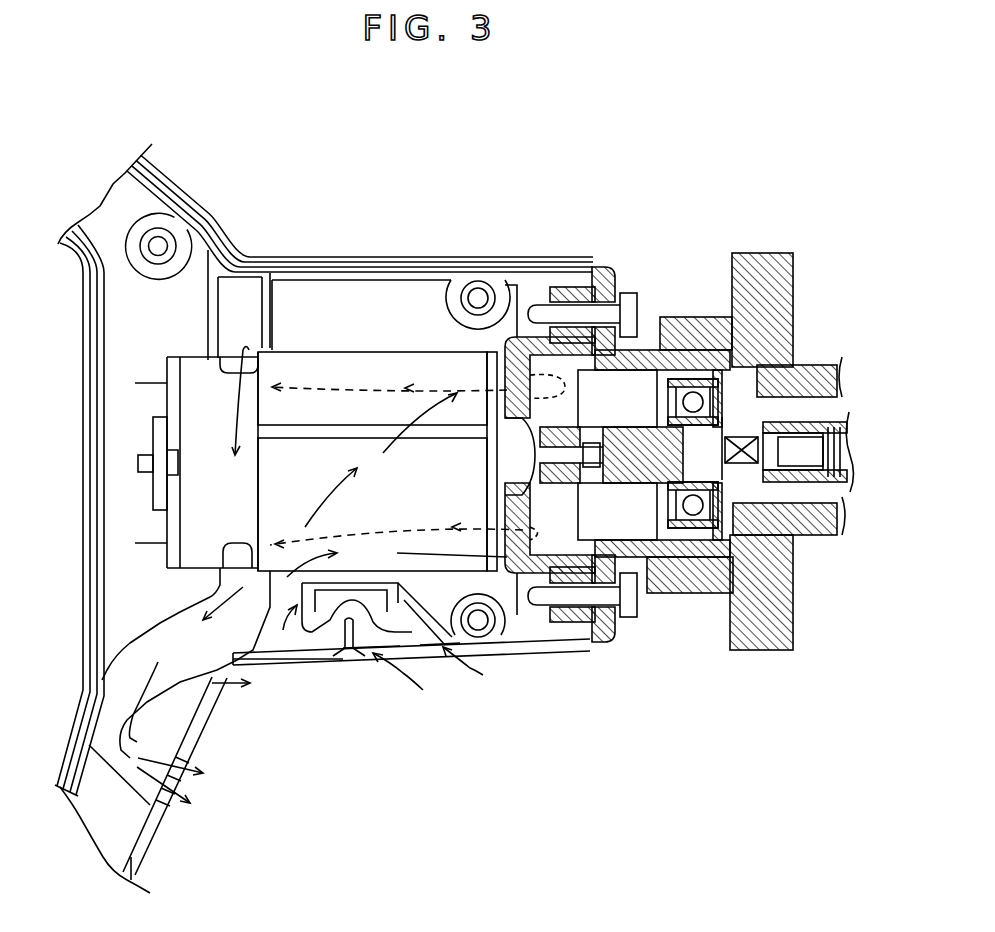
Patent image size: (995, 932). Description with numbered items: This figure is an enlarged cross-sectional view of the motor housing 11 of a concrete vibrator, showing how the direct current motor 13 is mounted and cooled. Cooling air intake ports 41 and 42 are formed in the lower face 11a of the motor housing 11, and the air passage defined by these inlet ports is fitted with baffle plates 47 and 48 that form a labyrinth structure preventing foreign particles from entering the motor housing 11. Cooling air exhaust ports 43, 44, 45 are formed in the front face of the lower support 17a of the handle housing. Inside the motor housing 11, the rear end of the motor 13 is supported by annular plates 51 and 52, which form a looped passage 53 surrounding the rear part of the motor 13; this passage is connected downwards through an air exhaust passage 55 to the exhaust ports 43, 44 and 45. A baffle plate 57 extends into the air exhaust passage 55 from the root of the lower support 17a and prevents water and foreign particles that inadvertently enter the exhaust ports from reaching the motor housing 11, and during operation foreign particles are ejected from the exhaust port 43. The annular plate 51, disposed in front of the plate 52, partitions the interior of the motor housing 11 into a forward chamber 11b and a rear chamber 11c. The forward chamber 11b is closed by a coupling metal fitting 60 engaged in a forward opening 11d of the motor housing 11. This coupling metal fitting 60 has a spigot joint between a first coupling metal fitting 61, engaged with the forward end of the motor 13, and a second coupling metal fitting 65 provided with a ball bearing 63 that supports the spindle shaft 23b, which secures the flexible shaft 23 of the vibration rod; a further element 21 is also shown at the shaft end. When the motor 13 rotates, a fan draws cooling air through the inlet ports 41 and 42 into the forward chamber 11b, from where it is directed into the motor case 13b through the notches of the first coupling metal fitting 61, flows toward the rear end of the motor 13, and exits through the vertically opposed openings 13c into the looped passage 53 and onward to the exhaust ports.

The motor housing 11 is at (348, 520).
The lower face of motor housing 11a is at (557, 653).
The forward chamber 11b is at (417, 297).
The rear chamber 11c is at (243, 297).
The forward opening 11d is at (543, 287).
The direct current motor 13 is at (350, 477).
The motor case 13b is at (377, 370).
The openings 13c is at (240, 548).
The lower support of handle housing 17a is at (140, 833).
The rotor hub lower portion 21 is at (805, 518).
The flexible shaft 23 is at (793, 430).
The spindle shaft 23b is at (760, 365).
The cooling air intake port 41 is at (464, 678).
The cooling air intake port 42 is at (399, 680).
The cooling air exhaust port 43 is at (213, 673).
The cooling air exhaust port 44 is at (203, 773).
The cooling air exhaust port 45 is at (190, 803).
The baffle plate 47 is at (503, 657).
The baffle plate 48 is at (330, 640).
The annular plate 51 is at (267, 309).
The annular plate 52 is at (210, 302).
The looped passage 53 is at (252, 580).
The air exhaust passage 55 is at (120, 688).
The baffle plate 57 is at (183, 670).
The coupling metal fitting 60 is at (619, 355).
The first coupling metal fitting 61 is at (512, 342).
The ball bearing 63 is at (707, 452).
The second coupling metal fitting 65 is at (640, 353).